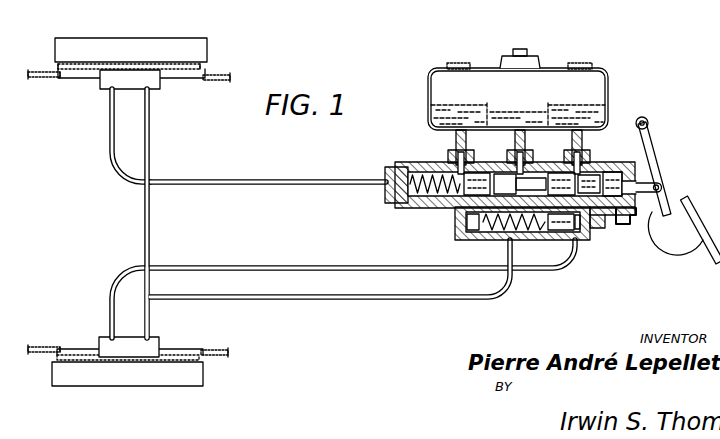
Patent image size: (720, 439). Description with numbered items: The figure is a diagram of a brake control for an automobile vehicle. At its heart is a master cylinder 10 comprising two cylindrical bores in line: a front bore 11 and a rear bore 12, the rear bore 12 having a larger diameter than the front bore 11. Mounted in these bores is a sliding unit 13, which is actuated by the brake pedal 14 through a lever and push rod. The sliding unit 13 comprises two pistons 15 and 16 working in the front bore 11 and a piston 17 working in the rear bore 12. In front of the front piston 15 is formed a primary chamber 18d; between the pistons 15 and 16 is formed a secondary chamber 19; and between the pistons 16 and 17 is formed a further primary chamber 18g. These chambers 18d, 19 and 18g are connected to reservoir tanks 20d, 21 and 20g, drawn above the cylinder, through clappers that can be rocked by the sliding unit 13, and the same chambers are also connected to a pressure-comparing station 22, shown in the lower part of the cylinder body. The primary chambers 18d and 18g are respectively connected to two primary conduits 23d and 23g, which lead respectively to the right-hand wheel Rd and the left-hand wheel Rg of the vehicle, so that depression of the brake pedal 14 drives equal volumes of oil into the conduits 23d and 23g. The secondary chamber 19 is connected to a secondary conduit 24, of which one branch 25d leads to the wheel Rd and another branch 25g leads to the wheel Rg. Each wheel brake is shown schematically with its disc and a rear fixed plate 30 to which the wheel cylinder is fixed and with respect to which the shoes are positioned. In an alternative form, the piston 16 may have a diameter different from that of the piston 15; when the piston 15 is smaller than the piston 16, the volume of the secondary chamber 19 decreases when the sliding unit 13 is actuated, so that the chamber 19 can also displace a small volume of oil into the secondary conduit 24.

The right-hand wheel Rd is at (117, 37).
The left-hand wheel Rg is at (145, 388).
The rear fixed plate 30 is at (226, 80).
The primary conduit 23d is at (110, 140).
The branch of secondary conduit 25d is at (150, 161).
The secondary conduit 24 is at (238, 186).
The front bore 11 is at (406, 165).
The tank 20d is at (480, 107).
The tank 21 is at (522, 107).
The tank 20g is at (595, 107).
The piston 15 is at (508, 183).
The piston 16 is at (562, 183).
The rear bore 12 is at (592, 173).
The piston 17 is at (616, 170).
The sliding unit 13 is at (669, 186).
The primary chamber 18d is at (400, 205).
The pressure-comparing station 22 is at (487, 242).
The secondary chamber 19 is at (547, 236).
The further primary chamber 18g is at (597, 222).
The master cylinder 10 is at (632, 220).
The brake pedal 14 is at (703, 250).
The primary conduit 23g is at (110, 308).
The branch of secondary conduit 25g is at (150, 316).